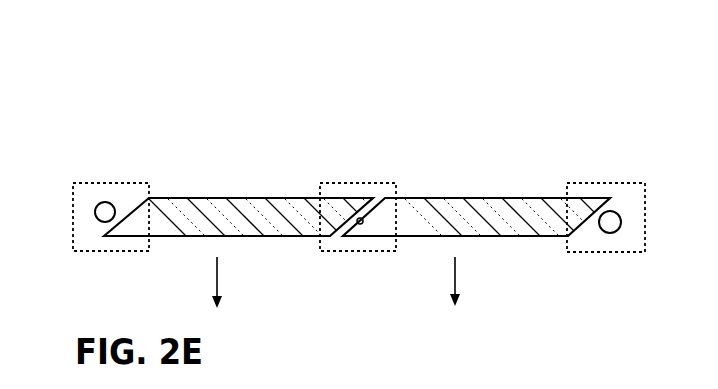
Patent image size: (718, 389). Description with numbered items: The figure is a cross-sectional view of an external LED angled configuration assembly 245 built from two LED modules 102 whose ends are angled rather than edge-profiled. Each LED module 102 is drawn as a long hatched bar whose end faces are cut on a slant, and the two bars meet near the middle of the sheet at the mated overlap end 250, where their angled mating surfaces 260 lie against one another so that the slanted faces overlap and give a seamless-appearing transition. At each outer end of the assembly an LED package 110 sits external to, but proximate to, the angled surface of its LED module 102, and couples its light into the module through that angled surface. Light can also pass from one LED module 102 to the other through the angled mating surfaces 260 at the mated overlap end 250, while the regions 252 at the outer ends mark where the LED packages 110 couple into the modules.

The LED module 102 is at (234, 168).
The LED package 110 is at (105, 222).
The external LED angled configuration assembly 245 is at (276, 130).
The mated overlap end 250 is at (375, 183).
The edge region 252 is at (102, 183).
The angled mating surfaces 260 is at (360, 224).